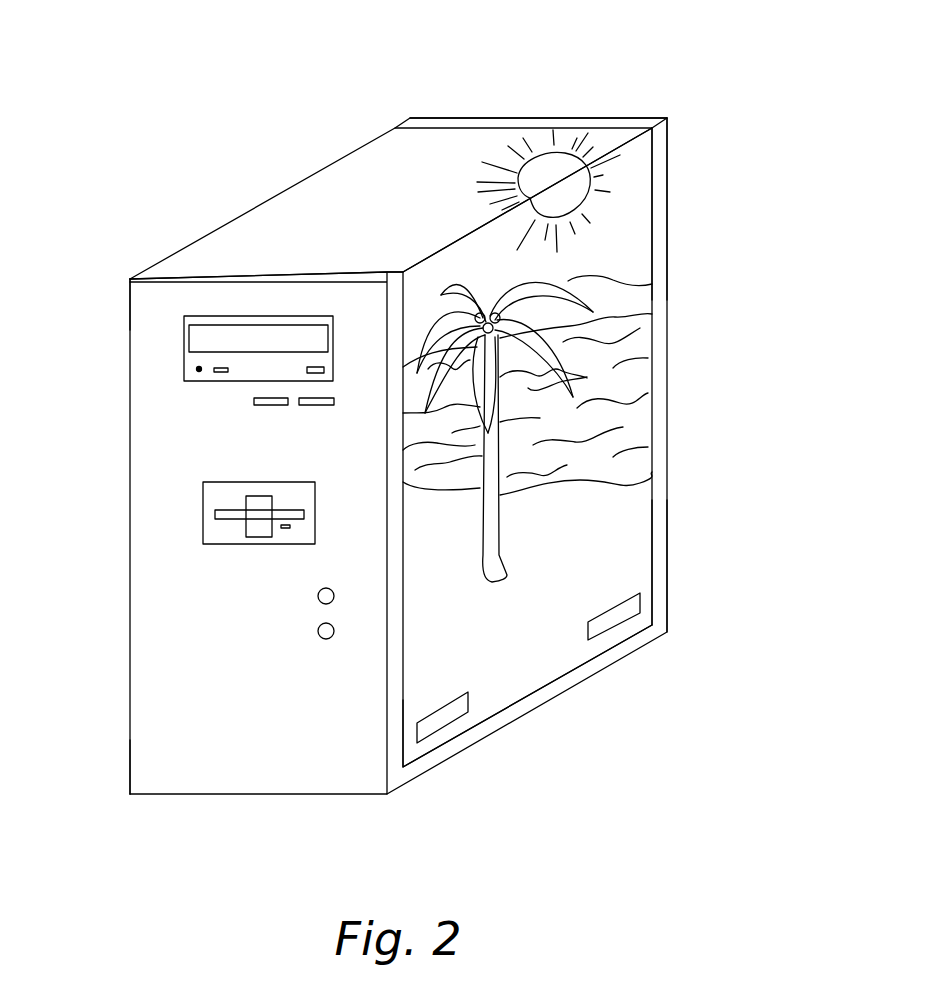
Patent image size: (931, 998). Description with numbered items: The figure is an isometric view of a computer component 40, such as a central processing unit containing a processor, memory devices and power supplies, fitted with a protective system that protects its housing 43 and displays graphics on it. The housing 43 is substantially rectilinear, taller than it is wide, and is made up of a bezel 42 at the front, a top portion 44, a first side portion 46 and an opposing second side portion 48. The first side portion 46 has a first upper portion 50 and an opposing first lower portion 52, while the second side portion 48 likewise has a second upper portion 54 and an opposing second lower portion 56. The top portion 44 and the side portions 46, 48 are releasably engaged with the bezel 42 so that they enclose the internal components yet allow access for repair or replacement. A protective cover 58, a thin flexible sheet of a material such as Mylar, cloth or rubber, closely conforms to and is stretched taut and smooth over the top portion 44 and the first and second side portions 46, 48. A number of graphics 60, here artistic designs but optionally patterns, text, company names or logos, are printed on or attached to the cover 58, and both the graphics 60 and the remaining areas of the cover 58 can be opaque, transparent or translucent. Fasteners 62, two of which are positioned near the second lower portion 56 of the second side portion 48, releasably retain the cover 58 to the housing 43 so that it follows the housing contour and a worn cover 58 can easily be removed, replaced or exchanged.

The computer component 40 is at (131, 111).
The bezel 42 is at (207, 530).
The housing 43 is at (479, 117).
The top portion 44 is at (260, 275).
The first side portion 46 is at (130, 540).
The second side portion 48 is at (657, 390).
The first upper portion 50 is at (130, 293).
The first lower portion 52 is at (130, 780).
The second upper portion 54 is at (656, 137).
The second lower portion 56 is at (657, 610).
The protective cover 58 is at (405, 720).
The graphics 60 is at (530, 197).
The fasteners 62 is at (442, 717).